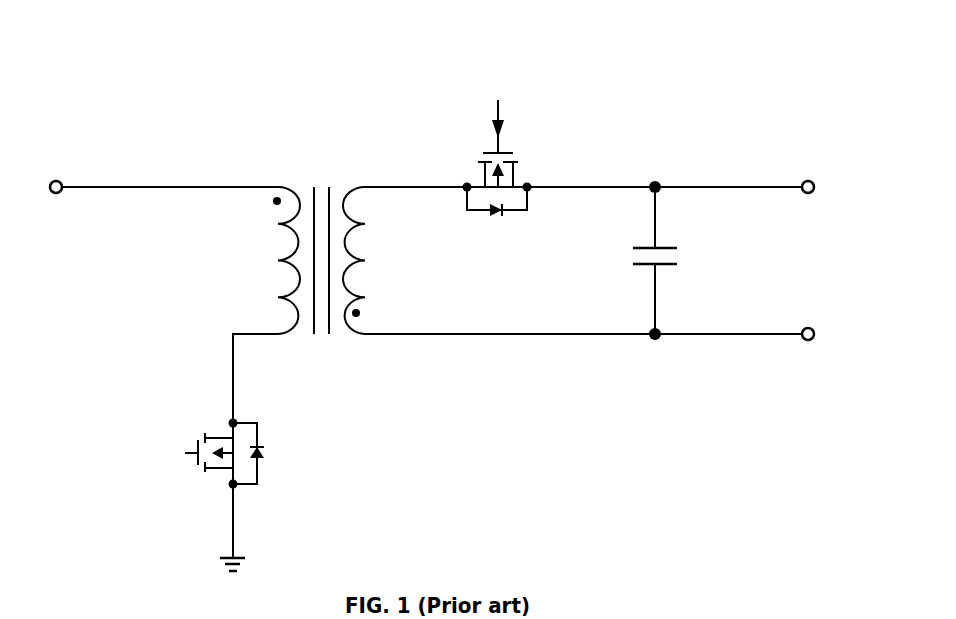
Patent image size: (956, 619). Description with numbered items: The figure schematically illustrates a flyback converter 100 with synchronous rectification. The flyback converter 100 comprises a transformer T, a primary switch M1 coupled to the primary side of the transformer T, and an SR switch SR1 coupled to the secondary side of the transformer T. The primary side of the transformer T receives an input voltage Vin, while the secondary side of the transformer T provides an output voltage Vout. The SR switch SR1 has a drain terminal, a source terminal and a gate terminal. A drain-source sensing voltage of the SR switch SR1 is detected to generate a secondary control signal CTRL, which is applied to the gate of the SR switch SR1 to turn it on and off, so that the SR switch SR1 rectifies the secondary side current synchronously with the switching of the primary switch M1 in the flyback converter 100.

The flyback converter 100 is at (727, 50).
The transformer T is at (319, 239).
The SR switch SR1 is at (501, 180).
The secondary control signal CTRL is at (503, 86).
The primary switch M1 is at (213, 440).
The input voltage Vin is at (48, 368).
The output voltage Vout is at (841, 271).